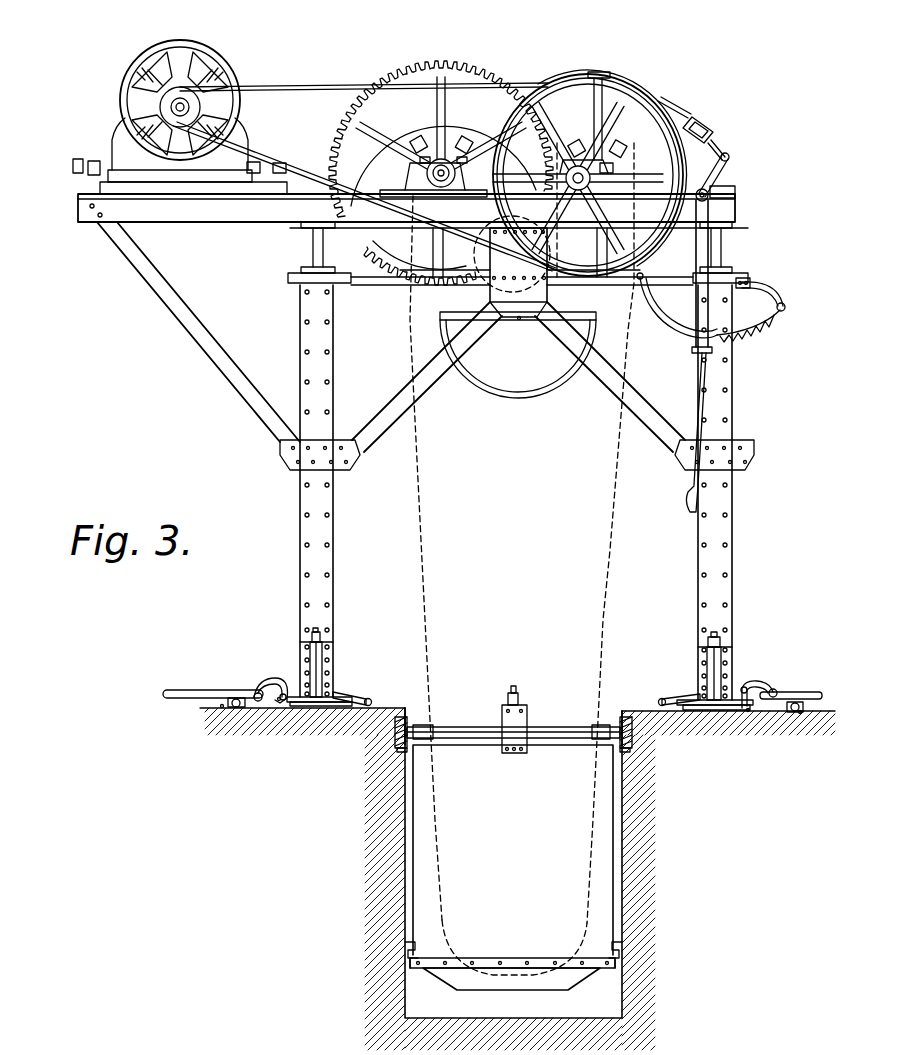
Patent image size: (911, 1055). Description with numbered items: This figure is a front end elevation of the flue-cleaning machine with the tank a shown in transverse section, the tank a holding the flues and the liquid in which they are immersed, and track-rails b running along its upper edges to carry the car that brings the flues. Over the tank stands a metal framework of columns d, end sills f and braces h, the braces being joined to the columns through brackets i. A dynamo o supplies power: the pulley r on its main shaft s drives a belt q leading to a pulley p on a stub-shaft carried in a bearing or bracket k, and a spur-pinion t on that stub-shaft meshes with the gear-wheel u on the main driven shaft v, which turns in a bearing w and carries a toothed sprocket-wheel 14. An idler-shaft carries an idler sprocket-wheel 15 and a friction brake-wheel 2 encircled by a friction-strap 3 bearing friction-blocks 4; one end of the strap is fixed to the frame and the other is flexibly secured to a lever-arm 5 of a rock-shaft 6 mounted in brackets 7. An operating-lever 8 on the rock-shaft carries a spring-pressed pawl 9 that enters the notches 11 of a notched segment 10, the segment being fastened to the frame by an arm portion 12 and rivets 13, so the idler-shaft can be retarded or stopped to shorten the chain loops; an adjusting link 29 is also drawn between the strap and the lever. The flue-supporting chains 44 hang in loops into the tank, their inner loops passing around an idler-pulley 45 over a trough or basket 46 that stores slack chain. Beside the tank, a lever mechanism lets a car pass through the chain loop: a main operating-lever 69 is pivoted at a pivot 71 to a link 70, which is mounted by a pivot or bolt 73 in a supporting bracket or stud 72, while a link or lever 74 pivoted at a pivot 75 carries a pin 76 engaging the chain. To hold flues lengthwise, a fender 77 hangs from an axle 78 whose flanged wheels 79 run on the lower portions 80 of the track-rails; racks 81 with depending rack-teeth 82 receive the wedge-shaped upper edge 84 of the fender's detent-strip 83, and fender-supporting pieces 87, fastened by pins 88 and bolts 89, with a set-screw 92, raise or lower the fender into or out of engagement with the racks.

The dynamo o is at (150, 58).
The pulley r is at (165, 103).
The main shaft s is at (175, 115).
The belt q is at (258, 162).
The end sills f is at (215, 208).
The gear-wheel u is at (441, 173).
The main driven shaft v is at (427, 163).
The bearing w is at (402, 174).
The toothed sprocket-wheel 14 is at (464, 140).
The friction-strap 3 is at (582, 74).
The friction-blocks 4 is at (636, 88).
The spur-pinion t is at (585, 148).
The bearing or bracket k is at (616, 146).
The pulley p is at (642, 112).
The friction brake-wheel 2 is at (660, 115).
The turnbuckle 29 is at (715, 136).
The lever-arm 5 is at (727, 168).
The rock-shaft 6 is at (712, 193).
The bearings or brackets 7 is at (722, 193).
The operating-lever 8 is at (705, 243).
The spring-pressed pawl 9 is at (190, 328).
The rivets 13 is at (742, 282).
The arm portion 12 is at (772, 290).
The notched segment 10 is at (784, 305).
The notches 11 is at (762, 328).
The idler sprocket-wheel 15 is at (606, 213).
The idler-pulleys 45 is at (478, 252).
The trough or basket 46 is at (510, 398).
The braces h is at (387, 427).
The flue-supporting chains 44 is at (423, 500).
The columns d is at (335, 550).
The brackets i is at (308, 460).
The main operating-lever 69 is at (188, 692).
The pivot or bolt 73 is at (235, 700).
The pivot 75 is at (260, 695).
The pivot 71 is at (285, 688).
The link or lever 74 is at (337, 693).
The pin 76 is at (366, 699).
The supporting bracket or stud 72 is at (222, 707).
The link 70 is at (278, 702).
The track-rails b is at (395, 712).
The flanged wheels 79 is at (407, 718).
The lower portions of the track-rails 80 is at (403, 750).
The axle 78 is at (453, 727).
The fender-supporting pieces 87 is at (515, 725).
The pins 88 is at (515, 751).
The bolts 89 is at (508, 708).
The set-screw 92 is at (515, 700).
The fenders 77 is at (513, 850).
The racks 81 is at (443, 927).
The wedge-shaped upper edge 84 is at (432, 953).
The detent-strip 83 is at (495, 962).
The rack-teeth 82 is at (410, 962).
The tank a is at (511, 993).